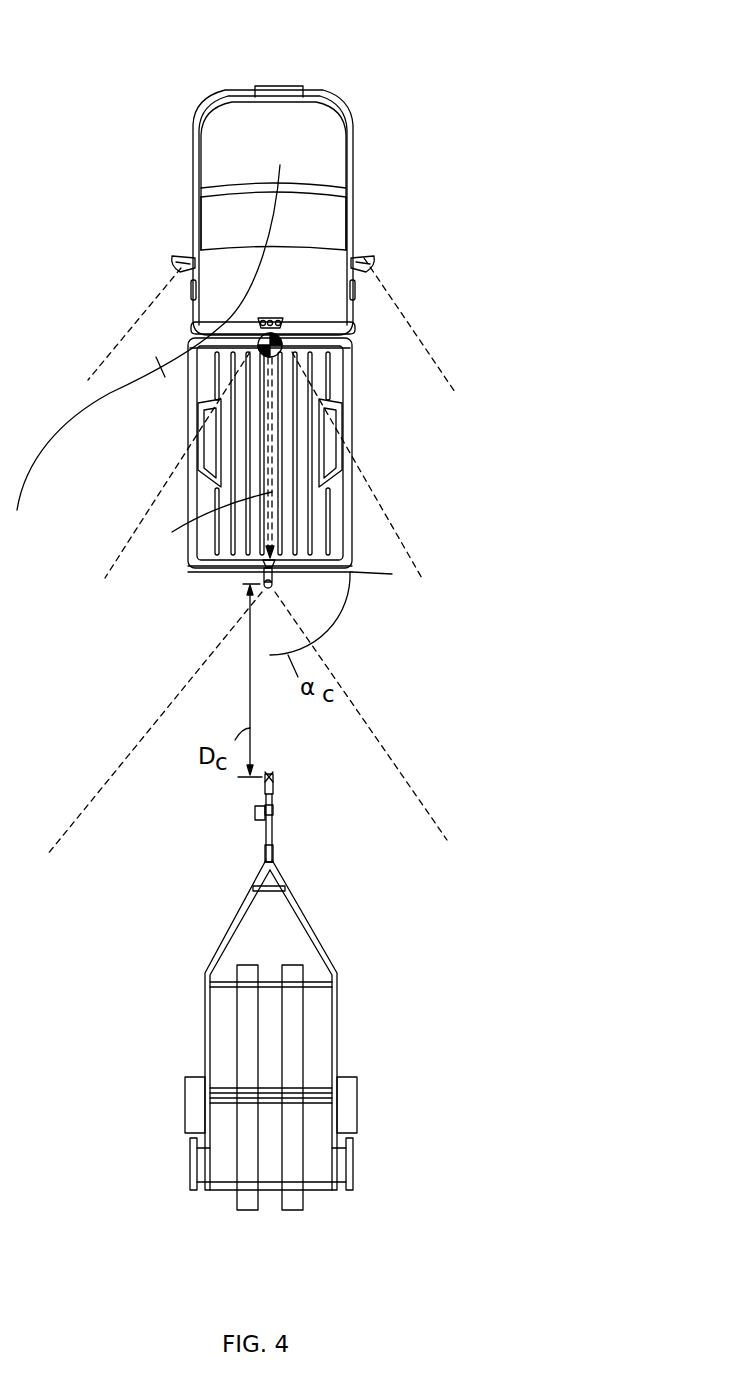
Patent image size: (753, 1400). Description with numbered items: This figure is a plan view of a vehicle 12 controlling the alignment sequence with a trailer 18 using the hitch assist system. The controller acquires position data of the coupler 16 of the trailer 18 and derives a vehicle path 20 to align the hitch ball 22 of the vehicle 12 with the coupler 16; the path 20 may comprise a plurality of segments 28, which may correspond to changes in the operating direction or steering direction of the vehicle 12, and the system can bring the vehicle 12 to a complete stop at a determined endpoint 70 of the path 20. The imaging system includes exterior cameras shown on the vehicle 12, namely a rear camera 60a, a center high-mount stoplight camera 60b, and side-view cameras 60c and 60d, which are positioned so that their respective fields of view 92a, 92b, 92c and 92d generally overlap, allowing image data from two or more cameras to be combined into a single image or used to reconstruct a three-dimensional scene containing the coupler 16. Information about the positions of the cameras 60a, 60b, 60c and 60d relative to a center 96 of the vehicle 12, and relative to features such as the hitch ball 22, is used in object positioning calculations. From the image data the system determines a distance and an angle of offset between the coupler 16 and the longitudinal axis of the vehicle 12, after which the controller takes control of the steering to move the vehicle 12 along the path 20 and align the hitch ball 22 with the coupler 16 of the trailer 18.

The vehicle 12 is at (357, 48).
The vehicle path 20 is at (282, 471).
The center of vehicle 96 is at (283, 342).
The endpoint 70 is at (262, 548).
The hitch ball 22 is at (262, 577).
The rear camera 60a is at (275, 564).
The center high-mount stoplight camera 60b is at (273, 320).
The side-view camera 60c is at (369, 264).
The side-view camera 60d is at (178, 262).
The field of view 92a is at (247, 723).
The field of view 92b is at (115, 550).
The field of view 92c is at (430, 350).
The field of view 92d is at (105, 358).
The segments 28 is at (236, 314).
The coupler 16 is at (274, 782).
The trailer 18 is at (215, 940).